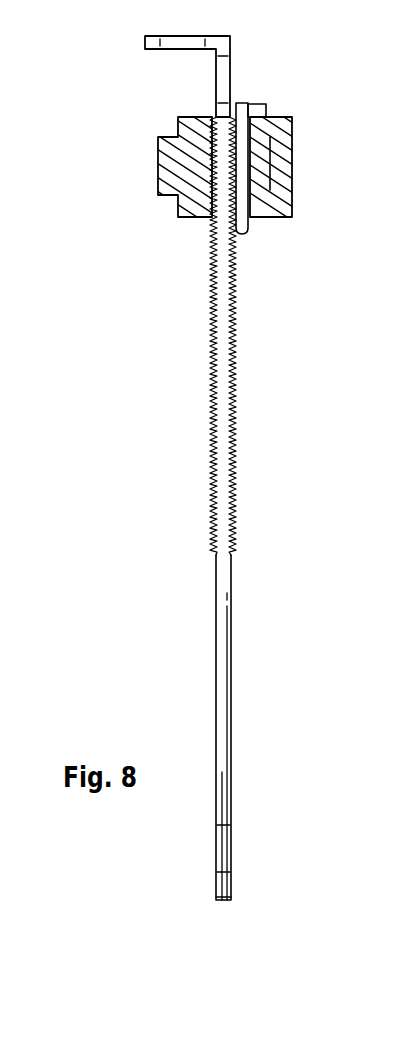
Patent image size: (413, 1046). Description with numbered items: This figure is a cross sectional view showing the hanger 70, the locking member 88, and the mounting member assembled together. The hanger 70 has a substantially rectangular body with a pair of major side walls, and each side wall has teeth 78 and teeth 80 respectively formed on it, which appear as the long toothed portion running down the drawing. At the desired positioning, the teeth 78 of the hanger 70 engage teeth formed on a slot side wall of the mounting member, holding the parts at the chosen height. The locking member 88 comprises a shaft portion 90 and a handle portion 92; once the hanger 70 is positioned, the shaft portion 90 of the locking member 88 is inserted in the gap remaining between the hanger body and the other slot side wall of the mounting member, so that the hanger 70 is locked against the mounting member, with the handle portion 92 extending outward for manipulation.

The hanger 70 is at (246, 609).
The teeth 78 is at (212, 413).
The teeth 80 is at (236, 383).
The locking member 88 is at (263, 101).
The shaft portion 90 is at (270, 165).
The handle portion 92 is at (268, 108).